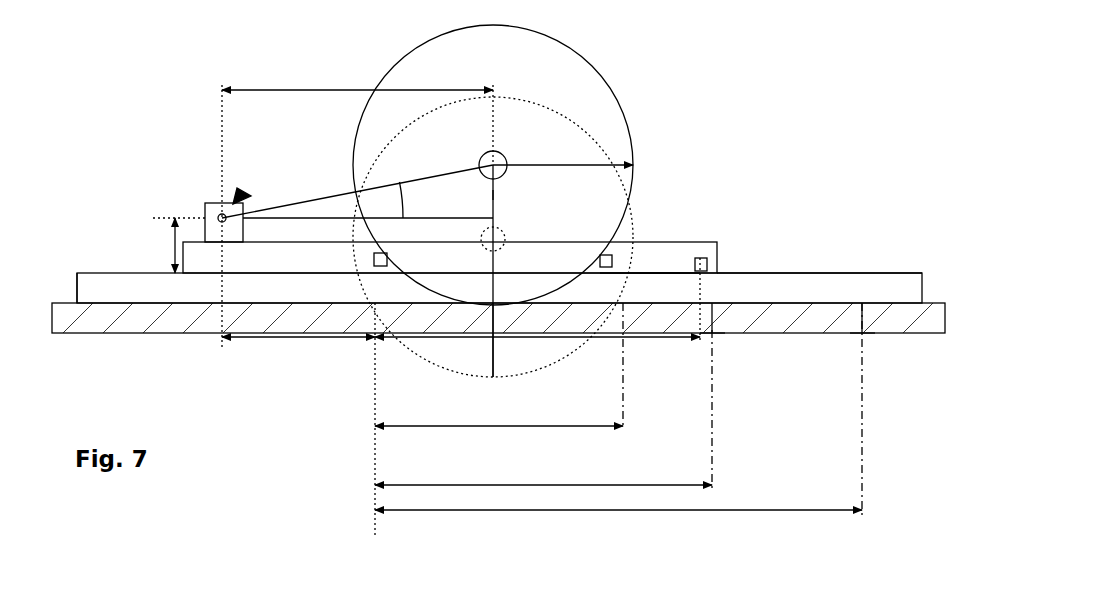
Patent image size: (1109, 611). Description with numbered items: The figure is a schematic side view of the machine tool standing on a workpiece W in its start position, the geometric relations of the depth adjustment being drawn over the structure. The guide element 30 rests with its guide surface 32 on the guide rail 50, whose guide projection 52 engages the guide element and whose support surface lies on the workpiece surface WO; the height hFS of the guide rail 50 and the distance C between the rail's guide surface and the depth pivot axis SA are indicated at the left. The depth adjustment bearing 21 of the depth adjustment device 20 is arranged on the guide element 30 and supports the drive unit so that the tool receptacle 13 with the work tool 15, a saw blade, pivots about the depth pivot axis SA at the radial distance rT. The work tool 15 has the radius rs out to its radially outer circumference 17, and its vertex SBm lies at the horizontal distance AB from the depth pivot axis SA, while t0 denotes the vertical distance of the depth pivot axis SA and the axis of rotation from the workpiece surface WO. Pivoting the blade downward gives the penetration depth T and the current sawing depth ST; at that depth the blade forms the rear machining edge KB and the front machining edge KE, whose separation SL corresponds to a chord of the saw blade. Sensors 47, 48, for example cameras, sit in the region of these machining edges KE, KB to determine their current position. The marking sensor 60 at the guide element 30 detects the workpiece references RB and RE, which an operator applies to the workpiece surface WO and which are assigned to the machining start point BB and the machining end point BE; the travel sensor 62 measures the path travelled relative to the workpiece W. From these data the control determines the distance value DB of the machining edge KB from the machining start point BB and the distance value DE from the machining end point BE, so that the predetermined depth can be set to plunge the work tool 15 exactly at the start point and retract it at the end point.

The tool receptacle 13 is at (485, 153).
The work tool 15 is at (587, 83).
The radially outer circumference 17 is at (632, 140).
The depth adjustment device 20 is at (244, 193).
The depth adjustment bearing 21 is at (213, 211).
The guide element 30 is at (650, 245).
The guide surface 32 is at (658, 277).
The sensor 47 is at (606, 258).
The sensor 48 is at (372, 257).
The guide rail 50 is at (888, 283).
The guide projection 52 is at (827, 273).
The marking sensor 60 is at (707, 258).
The travel sensor 62 is at (707, 265).
The workpiece W is at (130, 323).
The depth pivot axis SA is at (214, 200).
The vertex of the work tool SBm is at (350, 90).
The distance between guide surface and depth pivot axis C is at (170, 240).
The height of the guide rail hFS is at (118, 290).
The radial distance of the axis of rotation from the depth pivot axis rT is at (334, 198).
The radius of the work tool rs is at (558, 165).
The vertical distance of depth pivot axis and axis of rotation from workpiece surfac t0 is at (497, 195).
The penetration depth T is at (507, 240).
The workpiece surface WO is at (763, 300).
The distance between depth pivot axis and vertex AB is at (265, 340).
The rear machining edge KB is at (375, 318).
The current sawing depth ST is at (497, 360).
The front machining edge KE is at (625, 305).
The machining end point BE is at (713, 322).
The workpiece reference RE is at (713, 335).
The machining start point BB is at (863, 310).
The workpiece reference RB is at (863, 330).
The distance between front and rear machining edges SL is at (553, 428).
The distance value from machining end point DE is at (577, 485).
The distance value from machining start point DB is at (555, 512).